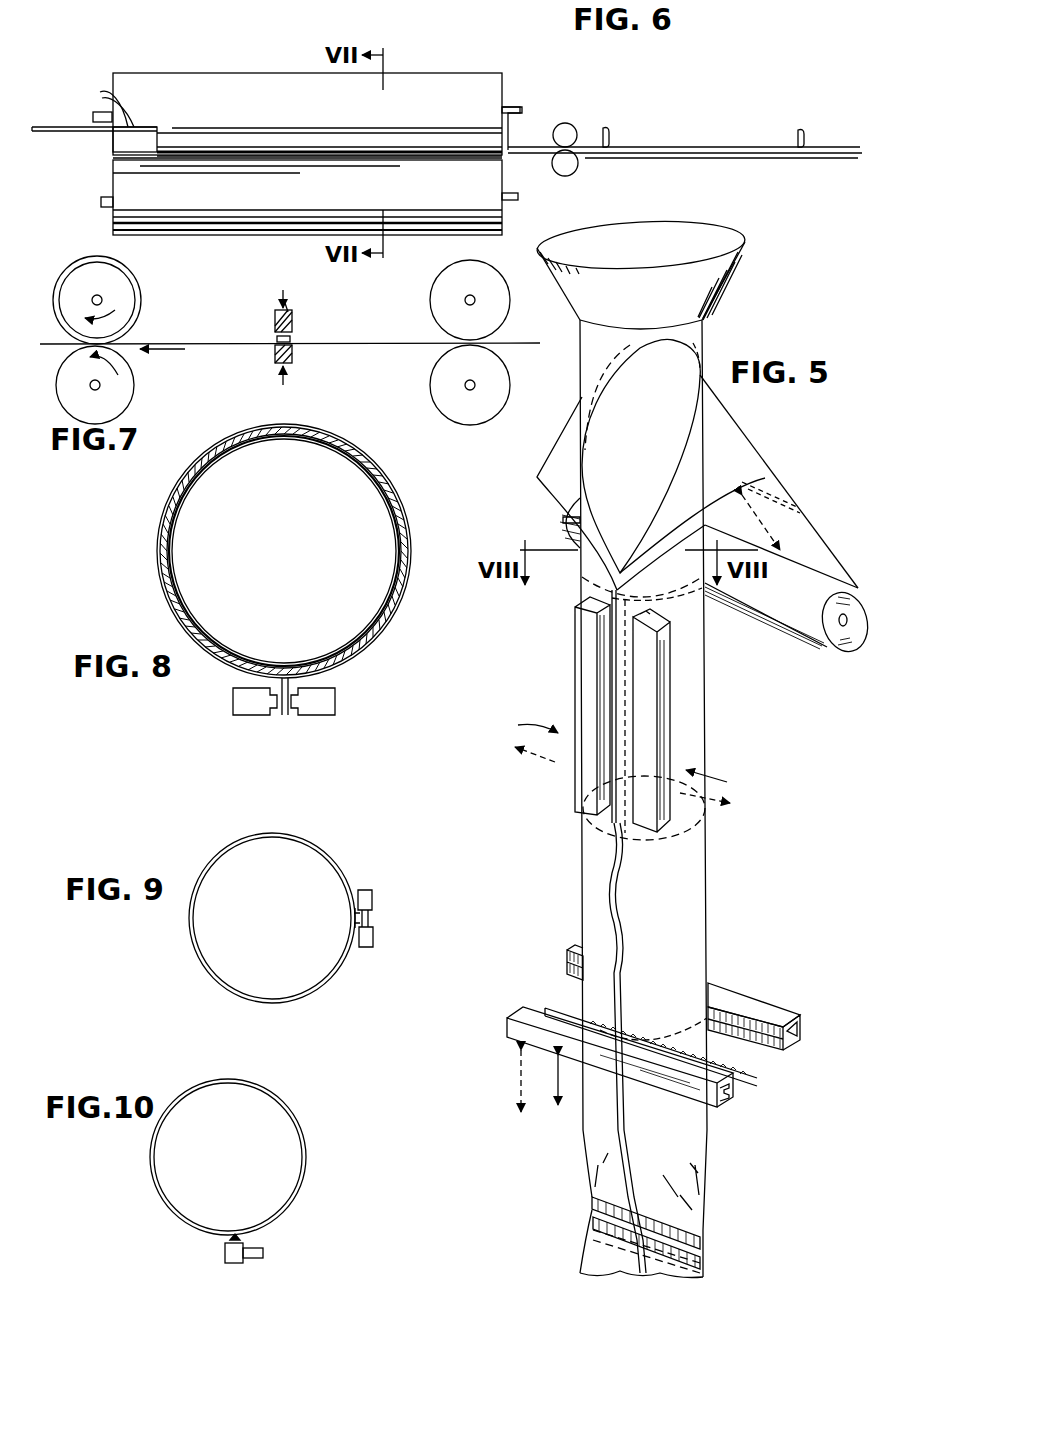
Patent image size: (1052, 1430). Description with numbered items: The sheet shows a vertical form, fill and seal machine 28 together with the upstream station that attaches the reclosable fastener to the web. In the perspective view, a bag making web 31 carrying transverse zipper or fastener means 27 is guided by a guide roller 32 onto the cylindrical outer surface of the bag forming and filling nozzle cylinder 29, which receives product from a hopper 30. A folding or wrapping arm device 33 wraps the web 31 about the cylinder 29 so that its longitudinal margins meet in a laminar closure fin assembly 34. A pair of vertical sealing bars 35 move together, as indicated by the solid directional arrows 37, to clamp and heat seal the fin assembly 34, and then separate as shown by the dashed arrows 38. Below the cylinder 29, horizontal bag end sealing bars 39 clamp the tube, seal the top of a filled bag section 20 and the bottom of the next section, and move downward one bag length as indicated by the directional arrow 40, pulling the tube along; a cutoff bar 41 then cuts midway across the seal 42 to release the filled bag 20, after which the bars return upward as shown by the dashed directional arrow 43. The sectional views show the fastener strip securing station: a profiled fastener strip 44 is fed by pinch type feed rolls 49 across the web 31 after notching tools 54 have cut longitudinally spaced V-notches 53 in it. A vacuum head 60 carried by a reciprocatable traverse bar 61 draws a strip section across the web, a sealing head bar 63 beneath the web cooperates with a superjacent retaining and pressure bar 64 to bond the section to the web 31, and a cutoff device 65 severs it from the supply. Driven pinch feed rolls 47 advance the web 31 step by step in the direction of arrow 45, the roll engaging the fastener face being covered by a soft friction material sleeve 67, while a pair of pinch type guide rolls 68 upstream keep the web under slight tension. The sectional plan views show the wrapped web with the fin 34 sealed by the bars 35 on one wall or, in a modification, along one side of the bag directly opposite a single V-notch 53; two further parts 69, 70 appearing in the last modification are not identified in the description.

In FIG. 5, the filled bag section 20 is at (722, 1154).
In FIG. 5, the reclosable fastener or zipper means 27 is at (672, 595).
In FIG. 5, the form, fill and seal machine 28 is at (728, 705).
In FIG. 8, the bag forming and filling nozzle cylinder 29 is at (257, 440).
In FIG. 5, the bag forming and filling nozzle cylinder 29 is at (649, 449).
In FIG. 5, the hopper 30 is at (718, 283).
In FIG. 7, the bag making web 31 is at (160, 340).
In FIG. 8, the bag making web 31 is at (284, 538).
In FIG. 5, the bag making web 31 is at (827, 545).
In FIG. 5, the guide roller 32 is at (832, 640).
In FIG. 5, the folding or wrapping arm device 33 is at (688, 517).
In FIG. 8, the longitudinal laminar closure fin assembly 34 is at (286, 712).
In FIG. 9, the longitudinal laminar closure fin assembly 34 is at (370, 918).
In FIG. 5, the longitudinal laminar closure fin assembly 34 is at (622, 940).
In FIG. 8, the vertical sealing bars 35 is at (242, 705).
In FIG. 9, the vertical sealing bars 35 is at (372, 893).
In FIG. 5, the vertical sealing bars 35 is at (647, 697).
In FIG. 5, the solid directional arrows 37 is at (540, 725).
In FIG. 5, the dashed arrows 38 is at (710, 797).
In FIG. 5, the bag end sealing bars 39 is at (717, 1073).
In FIG. 5, the directional arrow 40 is at (556, 1095).
In FIG. 5, the cutoff bar 41 is at (755, 1078).
In FIG. 5, the seal 42 is at (700, 1238).
In FIG. 5, the dashed directional arrow 43 is at (521, 1095).
In FIG. 6, the reclosable fastener strip 44 is at (845, 147).
In FIG. 7, the reclosable fastener strip 44 is at (290, 340).
In FIG. 8, the reclosable fastener strip 44 is at (284, 534).
In FIG. 10, the reclosable fastener strip 44 is at (193, 1222).
In FIG. 7, the directional arrow 45 is at (168, 352).
In FIG. 7, the driven pinch feed rolls 47 is at (60, 320).
In FIG. 6, the pinch type feed rolls 49 is at (568, 160).
In FIG. 6, the V-notches 53 is at (205, 150).
In FIG. 8, the V-notches 53 is at (158, 553).
In FIG. 9, the V-notches 53 is at (191, 918).
In FIG. 10, the V-notches 53 is at (152, 1157).
In FIG. 6, the notching tools 54 is at (796, 133).
In FIG. 6, the vacuum head 60 is at (122, 138).
In FIG. 7, the vacuum head 60 is at (275, 312).
In FIG. 6, the reciprocatable traverse bar 61 is at (68, 125).
In FIG. 7, the reciprocatable traverse bar 61 is at (290, 310).
In FIG. 6, the sealing head bar 63 is at (258, 170).
In FIG. 7, the sealing head bar 63 is at (292, 355).
In FIG. 6, the retaining and pressure bar 64 is at (322, 132).
In FIG. 7, the retaining and pressure bar 64 is at (292, 320).
In FIG. 6, the cutoff device 65 is at (508, 128).
In FIG. 7, the soft friction material sleeve 67 is at (76, 264).
In FIG. 6, the pinch type guide rolls 68 is at (468, 74).
In FIG. 7, the pinch type guide rolls 68 is at (492, 365).
In FIG. 10, the clamp body 69 is at (225, 1252).
In FIG. 10, the clamp arm 70 is at (263, 1253).